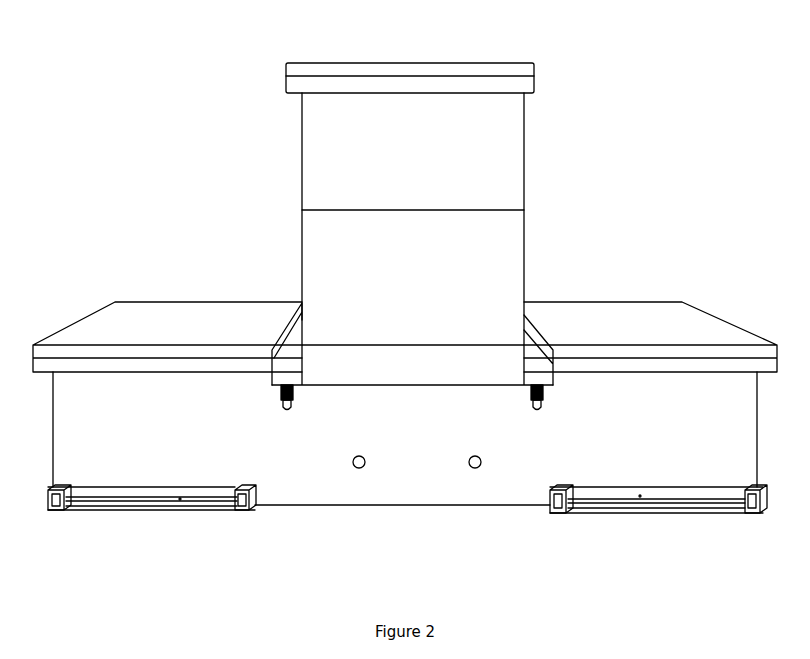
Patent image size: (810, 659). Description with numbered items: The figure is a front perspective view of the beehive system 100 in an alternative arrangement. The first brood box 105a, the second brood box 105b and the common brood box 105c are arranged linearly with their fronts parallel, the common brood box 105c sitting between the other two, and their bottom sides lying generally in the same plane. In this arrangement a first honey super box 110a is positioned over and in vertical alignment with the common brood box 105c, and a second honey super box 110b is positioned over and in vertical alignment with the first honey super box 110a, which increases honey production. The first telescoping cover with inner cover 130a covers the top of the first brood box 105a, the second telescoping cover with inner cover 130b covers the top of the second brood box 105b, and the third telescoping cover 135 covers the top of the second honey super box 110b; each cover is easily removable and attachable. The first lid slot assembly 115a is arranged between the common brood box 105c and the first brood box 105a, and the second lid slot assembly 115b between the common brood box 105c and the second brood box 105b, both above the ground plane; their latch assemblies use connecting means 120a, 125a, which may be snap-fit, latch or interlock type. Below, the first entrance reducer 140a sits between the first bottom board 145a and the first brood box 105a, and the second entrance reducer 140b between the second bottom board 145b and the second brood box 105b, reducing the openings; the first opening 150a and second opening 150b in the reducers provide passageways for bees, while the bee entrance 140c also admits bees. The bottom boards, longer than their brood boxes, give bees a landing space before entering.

The beehive system 100 is at (70, 58).
The first brood box 105a is at (673, 440).
The second brood box 105b is at (208, 440).
The common brood box 105c is at (410, 448).
The first honey super box 110a is at (440, 285).
The second honey super box 110b is at (492, 167).
The first lid slot assembly 115a is at (538, 365).
The second lid slot assembly 115b is at (297, 352).
The first connecting means 120a is at (548, 385).
The first connecting means 125a is at (275, 385).
The first telescoping cover with inner cover 130a is at (613, 322).
The second telescoping cover with inner cover 130b is at (170, 320).
The third telescoping cover with inner cover 135 is at (445, 63).
The first entrance reducer 140a is at (640, 497).
The second entrance reducer 140b is at (180, 500).
The bee entrance 140c is at (355, 458).
The first bottom board 145a is at (570, 513).
The second bottom board 145b is at (108, 507).
The first opening in the entrance reducer 150a is at (745, 492).
The second opening in the entrance reducer 150b is at (66, 492).